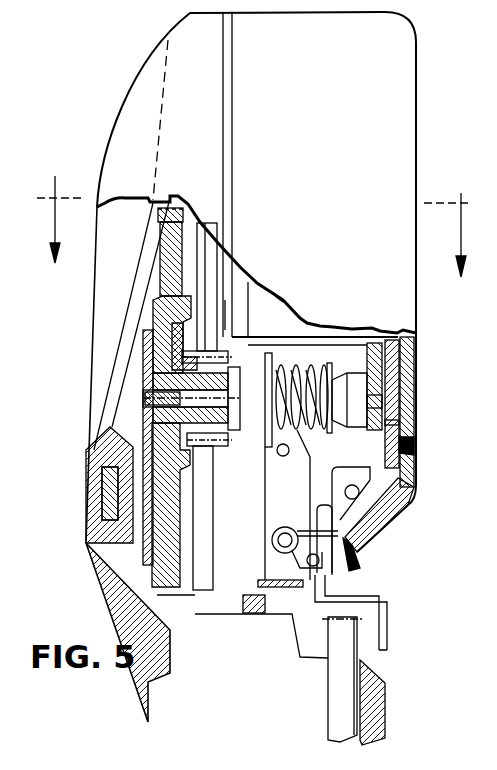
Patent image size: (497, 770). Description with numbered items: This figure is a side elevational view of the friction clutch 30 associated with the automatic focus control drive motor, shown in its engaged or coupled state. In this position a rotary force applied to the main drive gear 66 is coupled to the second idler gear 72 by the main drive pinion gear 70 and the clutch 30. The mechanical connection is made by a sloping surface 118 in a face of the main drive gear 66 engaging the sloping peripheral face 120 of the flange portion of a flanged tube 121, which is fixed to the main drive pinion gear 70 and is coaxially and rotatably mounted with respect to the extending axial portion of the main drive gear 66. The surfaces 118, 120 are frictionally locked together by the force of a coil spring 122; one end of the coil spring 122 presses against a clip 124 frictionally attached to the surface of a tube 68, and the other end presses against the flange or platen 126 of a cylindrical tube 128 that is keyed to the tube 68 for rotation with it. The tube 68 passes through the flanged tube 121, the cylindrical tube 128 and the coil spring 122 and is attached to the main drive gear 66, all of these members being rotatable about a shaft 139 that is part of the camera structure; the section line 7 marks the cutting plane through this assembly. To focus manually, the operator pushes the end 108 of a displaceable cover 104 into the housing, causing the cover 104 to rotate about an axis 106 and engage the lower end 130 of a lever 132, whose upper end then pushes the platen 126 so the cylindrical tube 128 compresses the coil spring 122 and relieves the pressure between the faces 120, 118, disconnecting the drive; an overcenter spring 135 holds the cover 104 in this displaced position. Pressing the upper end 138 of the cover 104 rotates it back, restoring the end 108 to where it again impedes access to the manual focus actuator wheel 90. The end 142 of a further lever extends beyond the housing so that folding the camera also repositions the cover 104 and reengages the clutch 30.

The section line 7- 7 is at (254, 216).
The clutch 30 is at (228, 316).
The main drive gear 66 is at (190, 200).
The tube 68 is at (358, 383).
The main drive pinion gear 70 is at (281, 312).
The second idler gear 72 is at (207, 252).
The manual focus actuator wheel 90 is at (333, 682).
The displaceable cover 104 is at (392, 513).
The axis 106 is at (352, 485).
The end of displaceable cover 108 is at (358, 568).
The sloping surface 118 is at (170, 290).
The sloping peripheral face 120 is at (178, 303).
The flanged tube 121 is at (221, 300).
The coil spring 122 is at (353, 340).
The clip 124 is at (355, 368).
The flange or platen 126 is at (290, 385).
The cylindrical tube 128 is at (238, 355).
The lower end of lever 130 is at (273, 572).
The lever 132 is at (290, 458).
The overcenter spring 135 is at (273, 520).
The upper end of cover 138 is at (400, 453).
The shaft 139 is at (167, 417).
The end of lever 142 is at (393, 627).